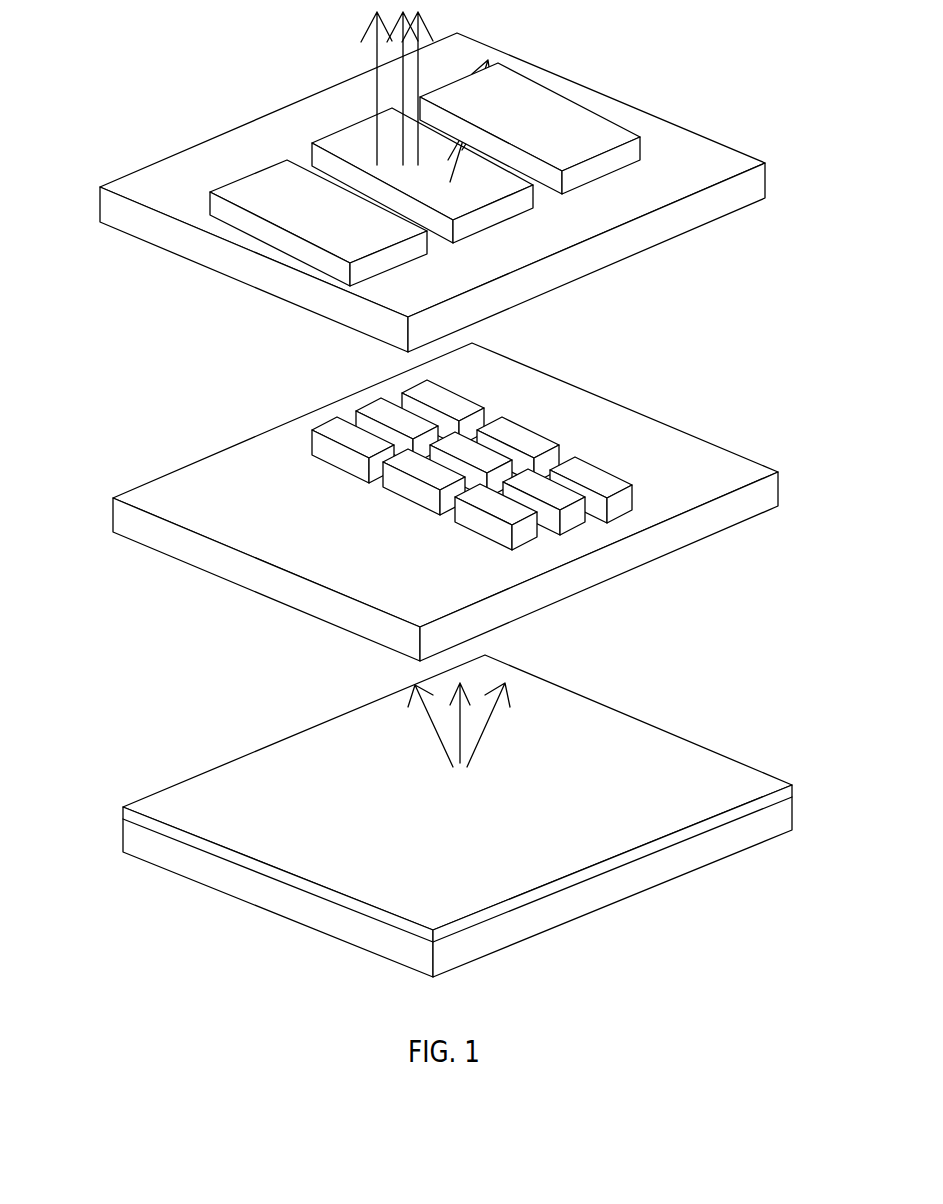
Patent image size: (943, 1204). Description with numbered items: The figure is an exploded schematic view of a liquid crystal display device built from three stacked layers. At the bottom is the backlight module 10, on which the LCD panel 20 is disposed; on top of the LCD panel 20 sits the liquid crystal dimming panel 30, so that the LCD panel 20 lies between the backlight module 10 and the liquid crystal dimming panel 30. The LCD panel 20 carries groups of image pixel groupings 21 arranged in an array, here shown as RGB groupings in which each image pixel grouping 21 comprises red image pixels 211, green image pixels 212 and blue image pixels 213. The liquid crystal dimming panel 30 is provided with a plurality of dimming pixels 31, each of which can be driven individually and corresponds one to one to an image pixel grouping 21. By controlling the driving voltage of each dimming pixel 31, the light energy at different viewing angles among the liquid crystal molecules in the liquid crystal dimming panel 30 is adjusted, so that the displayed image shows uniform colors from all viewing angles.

The backlight module 10 is at (247, 800).
The LCD panel 20 is at (243, 463).
The image pixel grouping 21 is at (563, 419).
The red image pixel 211 is at (462, 405).
The green image pixel 212 is at (540, 438).
The blue image pixel 213 is at (669, 450).
The liquid crystal dimming panel 30 is at (243, 151).
The dimming pixel 31 is at (568, 143).